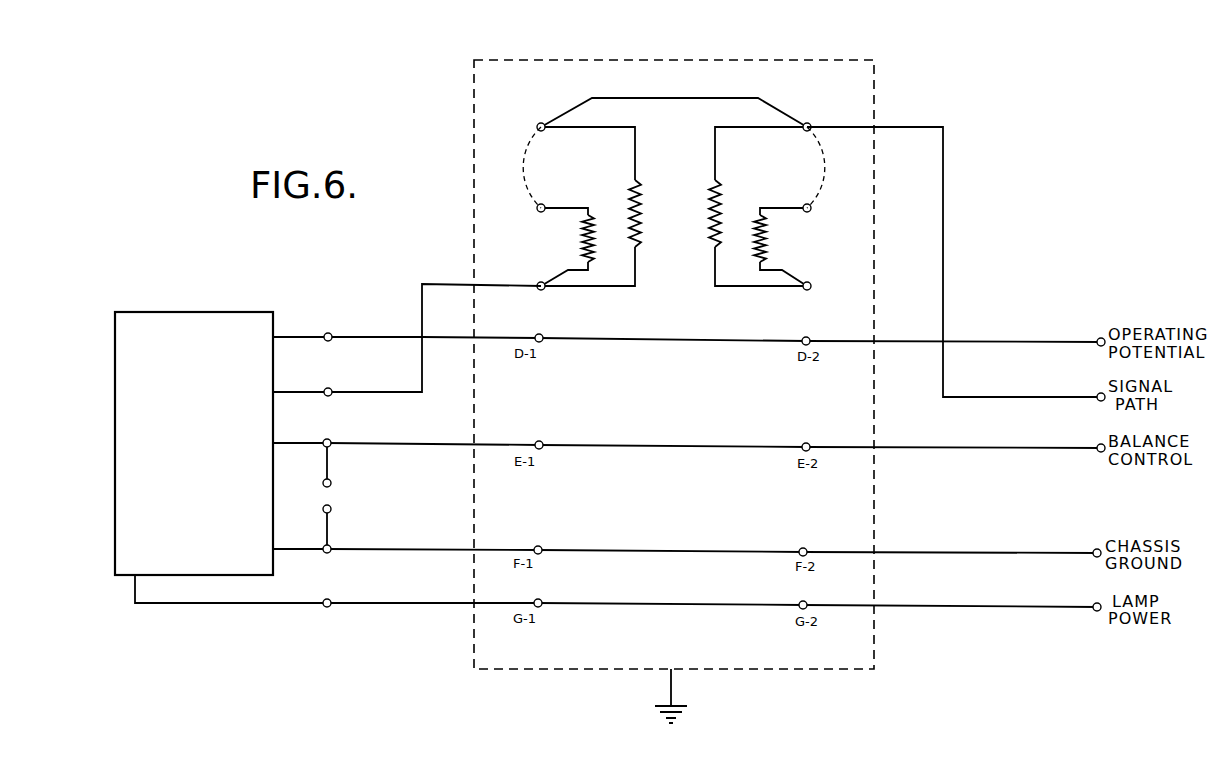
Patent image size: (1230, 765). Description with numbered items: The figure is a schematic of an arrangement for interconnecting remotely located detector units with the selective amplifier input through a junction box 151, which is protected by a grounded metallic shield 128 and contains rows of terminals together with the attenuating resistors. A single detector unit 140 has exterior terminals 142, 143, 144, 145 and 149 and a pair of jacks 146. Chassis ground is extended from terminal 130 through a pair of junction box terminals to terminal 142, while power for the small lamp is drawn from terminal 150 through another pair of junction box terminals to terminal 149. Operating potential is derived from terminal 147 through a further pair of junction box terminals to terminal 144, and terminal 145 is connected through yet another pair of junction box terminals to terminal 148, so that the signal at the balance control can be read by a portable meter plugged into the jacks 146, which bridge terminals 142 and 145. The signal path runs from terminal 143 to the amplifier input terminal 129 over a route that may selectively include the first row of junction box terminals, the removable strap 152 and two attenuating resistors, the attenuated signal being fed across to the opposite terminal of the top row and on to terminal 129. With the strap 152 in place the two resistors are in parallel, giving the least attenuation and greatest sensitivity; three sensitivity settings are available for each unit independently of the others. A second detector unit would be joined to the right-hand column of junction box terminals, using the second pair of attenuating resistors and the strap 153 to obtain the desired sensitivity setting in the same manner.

The grounded metallic shield 128 is at (768, 60).
The junction box 151 is at (655, 60).
The removable strap 152 is at (523, 163).
The strap 153 is at (826, 165).
The detector unit 140 is at (197, 312).
The terminal 144 is at (329, 332).
The terminal 143 is at (329, 387).
The terminal 145 is at (328, 438).
The jacks 146 is at (333, 496).
The terminal 142 is at (329, 554).
The terminal 149 is at (327, 608).
The terminal 147 is at (1098, 338).
The terminal 129 is at (1098, 393).
The terminal 148 is at (1098, 444).
The terminal 130 is at (1094, 549).
The terminal 150 is at (1094, 603).